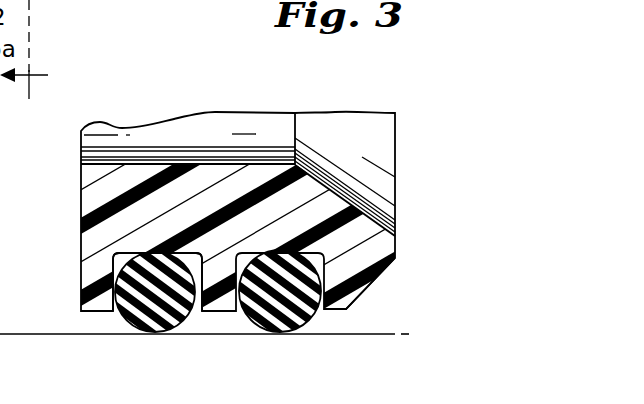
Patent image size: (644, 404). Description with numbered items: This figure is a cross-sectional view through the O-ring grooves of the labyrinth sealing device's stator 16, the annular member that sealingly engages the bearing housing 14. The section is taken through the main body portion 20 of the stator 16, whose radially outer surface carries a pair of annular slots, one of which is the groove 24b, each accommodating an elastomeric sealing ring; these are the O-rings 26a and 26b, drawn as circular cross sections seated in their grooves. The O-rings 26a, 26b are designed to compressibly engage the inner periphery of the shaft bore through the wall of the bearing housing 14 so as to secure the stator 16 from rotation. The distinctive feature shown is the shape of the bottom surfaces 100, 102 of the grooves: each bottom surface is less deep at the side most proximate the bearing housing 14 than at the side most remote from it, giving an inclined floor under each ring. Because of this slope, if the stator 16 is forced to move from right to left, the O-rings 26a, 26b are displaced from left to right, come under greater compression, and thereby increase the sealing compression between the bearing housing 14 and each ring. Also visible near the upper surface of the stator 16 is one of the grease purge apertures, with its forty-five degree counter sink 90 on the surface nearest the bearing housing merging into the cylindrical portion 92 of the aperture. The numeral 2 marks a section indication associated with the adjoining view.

The section line of FIG. 2 is at (26, 52).
The bearing housing 14 is at (378, 344).
The annular stator 16 is at (249, 88).
The main body portion 20 is at (357, 272).
The annular slot 24b is at (115, 257).
The elastomeric sealing ring 26a is at (301, 320).
The elastomeric sealing ring 26b is at (152, 320).
The counter sink 90 is at (340, 122).
The cylindrical portion 92 is at (273, 122).
The bottom surface 100 is at (358, 228).
The bottom surface 102 is at (176, 255).